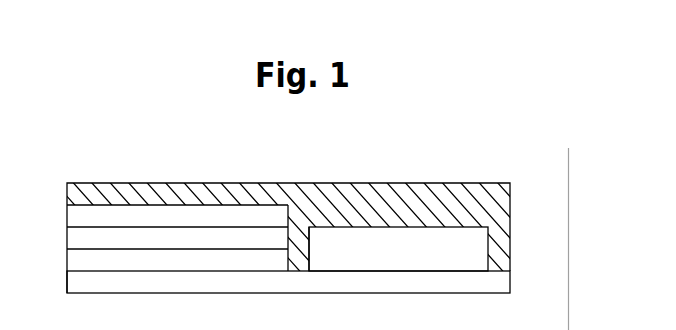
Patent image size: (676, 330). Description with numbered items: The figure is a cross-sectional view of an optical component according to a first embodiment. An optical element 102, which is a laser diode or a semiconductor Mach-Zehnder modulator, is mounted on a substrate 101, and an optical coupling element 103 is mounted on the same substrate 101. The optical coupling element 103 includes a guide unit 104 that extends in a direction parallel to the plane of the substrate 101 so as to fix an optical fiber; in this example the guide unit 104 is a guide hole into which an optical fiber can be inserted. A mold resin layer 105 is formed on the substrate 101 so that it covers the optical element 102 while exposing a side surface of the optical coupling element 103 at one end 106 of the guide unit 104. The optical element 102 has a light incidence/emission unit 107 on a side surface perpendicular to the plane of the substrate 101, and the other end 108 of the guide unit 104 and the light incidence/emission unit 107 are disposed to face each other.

The substrate 101 is at (511, 282).
The optical element 102 is at (398, 237).
The optical coupling element 103 is at (180, 210).
The guide unit 104 is at (250, 235).
The mold resin layer 105 is at (511, 207).
The one end of the guide unit 106 is at (67, 240).
The light incidence/emission unit 107 is at (303, 240).
The other end of the guide unit 108 is at (297, 260).